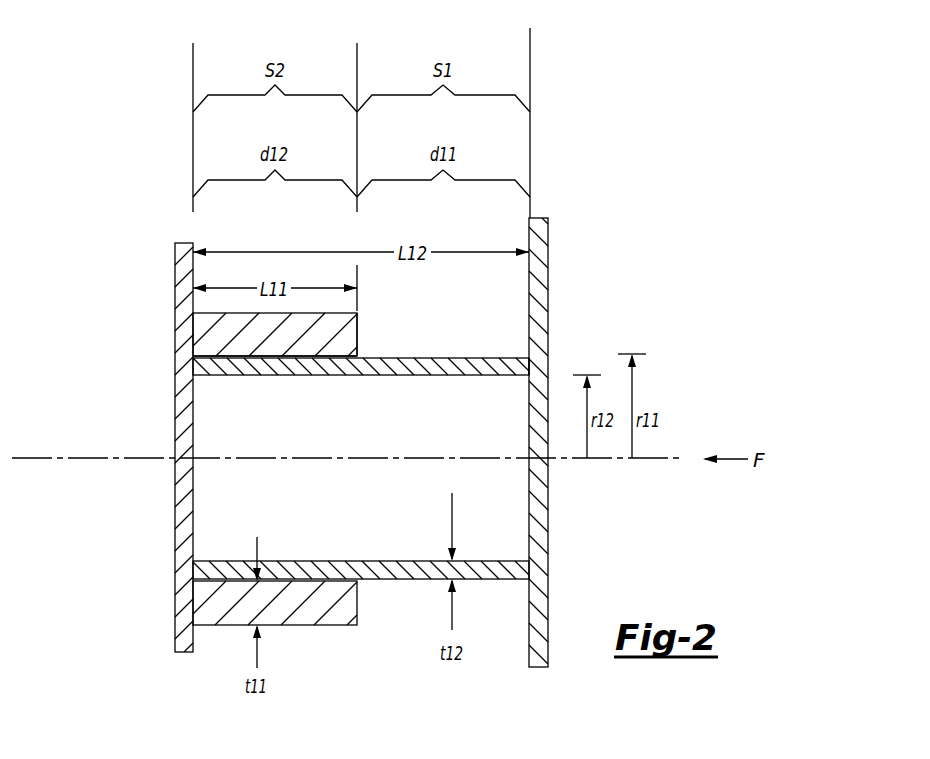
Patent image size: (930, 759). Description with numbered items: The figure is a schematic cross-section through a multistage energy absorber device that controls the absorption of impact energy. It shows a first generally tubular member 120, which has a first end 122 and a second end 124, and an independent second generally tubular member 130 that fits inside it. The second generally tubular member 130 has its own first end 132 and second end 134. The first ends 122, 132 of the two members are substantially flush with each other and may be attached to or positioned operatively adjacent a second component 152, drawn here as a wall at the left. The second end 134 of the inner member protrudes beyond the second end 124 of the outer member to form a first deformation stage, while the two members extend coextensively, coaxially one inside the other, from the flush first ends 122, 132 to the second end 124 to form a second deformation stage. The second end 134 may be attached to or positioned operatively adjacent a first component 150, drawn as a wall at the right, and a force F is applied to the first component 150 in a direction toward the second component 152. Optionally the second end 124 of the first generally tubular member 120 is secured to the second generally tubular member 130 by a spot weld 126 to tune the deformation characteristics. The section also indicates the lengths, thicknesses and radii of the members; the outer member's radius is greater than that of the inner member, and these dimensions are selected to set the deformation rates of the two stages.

The first generally tubular member 120 is at (271, 502).
The first end of first generally tubular member 122 is at (179, 343).
The second end of first generally tubular member 124 is at (358, 333).
The spot weld 126 is at (362, 353).
The second generally tubular member 130 is at (355, 454).
The first end of second generally tubular member 132 is at (179, 368).
The second end of second generally tubular member 134 is at (532, 371).
The first component 150 is at (549, 255).
The second component 152 is at (175, 516).